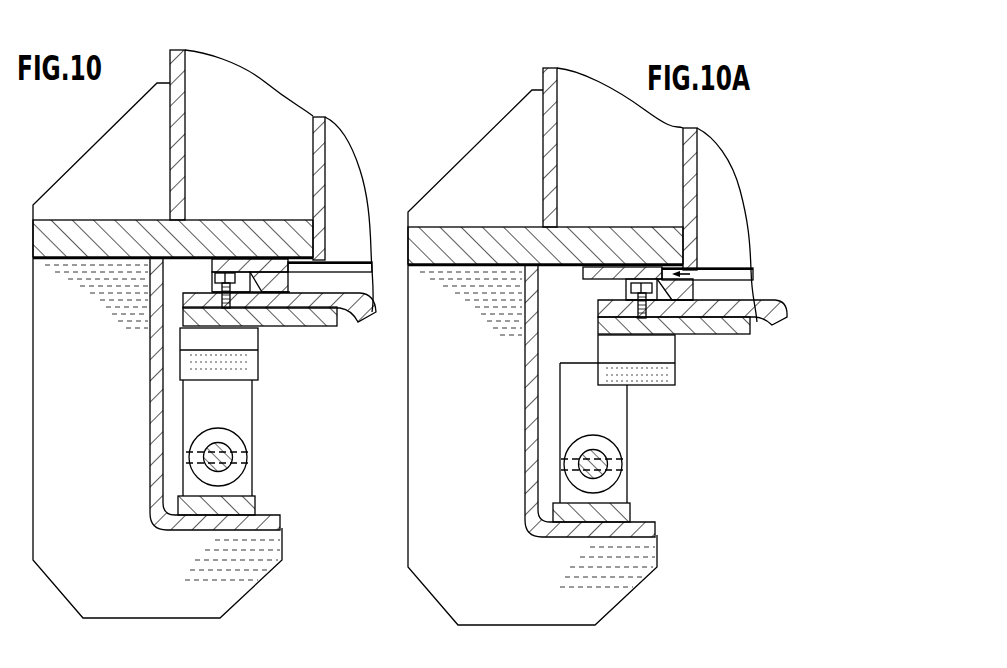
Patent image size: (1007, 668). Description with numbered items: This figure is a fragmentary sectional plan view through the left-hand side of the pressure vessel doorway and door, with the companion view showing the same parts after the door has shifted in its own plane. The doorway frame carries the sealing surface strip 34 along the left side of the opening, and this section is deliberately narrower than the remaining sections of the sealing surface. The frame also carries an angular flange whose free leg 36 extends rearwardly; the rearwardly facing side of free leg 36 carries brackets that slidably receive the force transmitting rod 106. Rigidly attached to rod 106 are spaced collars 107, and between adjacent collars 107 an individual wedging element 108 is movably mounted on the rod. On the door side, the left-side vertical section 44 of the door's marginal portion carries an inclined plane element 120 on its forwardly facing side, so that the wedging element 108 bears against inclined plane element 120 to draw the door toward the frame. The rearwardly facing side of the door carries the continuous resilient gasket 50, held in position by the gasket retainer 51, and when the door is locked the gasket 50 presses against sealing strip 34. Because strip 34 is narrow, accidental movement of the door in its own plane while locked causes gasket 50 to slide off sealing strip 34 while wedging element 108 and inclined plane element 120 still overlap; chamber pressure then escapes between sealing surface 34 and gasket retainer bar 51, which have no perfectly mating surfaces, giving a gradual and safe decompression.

In FIG. 10, the sealing surface strip 34 is at (254, 261).
In FIG. 10A, the sealing surface strip 34 is at (626, 268).
In FIG. 10, the free leg 36 is at (281, 526).
In FIG. 10A, the free leg 36 is at (656, 533).
In FIG. 10, the left-side vertical section 44 is at (183, 298).
In FIG. 10A, the left-side vertical section 44 is at (625, 283).
In FIG. 10, the gasket 50 is at (271, 261).
In FIG. 10A, the gasket 50 is at (695, 287).
In FIG. 10, the gasket retainer 51 is at (215, 281).
In FIG. 10A, the gasket retainer 51 is at (630, 292).
In FIG. 10, the force transmitting rod 106 is at (247, 459).
In FIG. 10A, the force transmitting rod 106 is at (619, 470).
In FIG. 10, the collar 107 is at (203, 462).
In FIG. 10A, the collar 107 is at (570, 471).
In FIG. 10, the wedging element 108 is at (241, 423).
In FIG. 10A, the wedging element 108 is at (612, 427).
In FIG. 10, the inclined plane element 120 is at (247, 342).
In FIG. 10A, the inclined plane element 120 is at (669, 352).